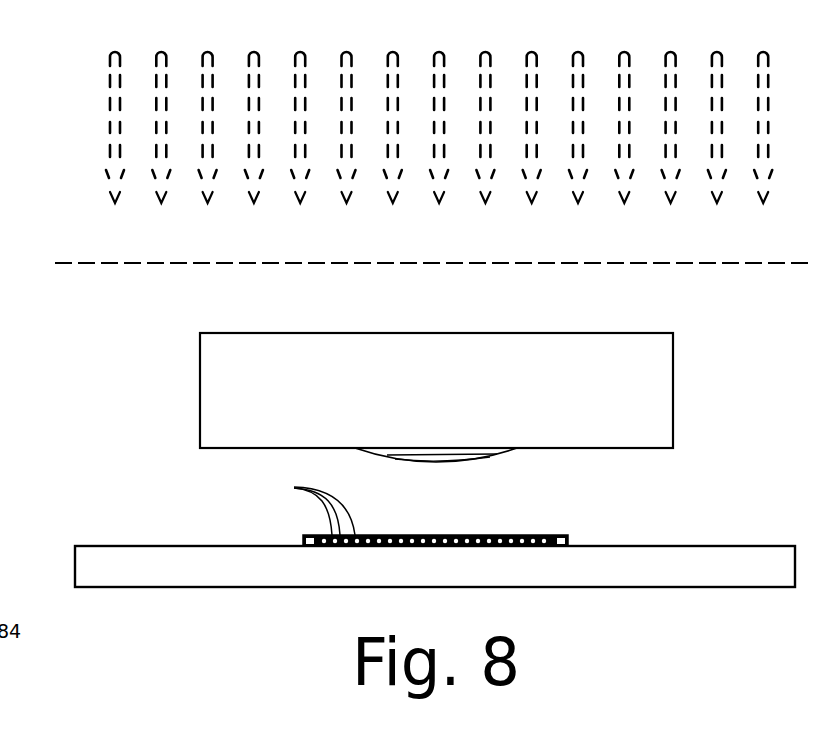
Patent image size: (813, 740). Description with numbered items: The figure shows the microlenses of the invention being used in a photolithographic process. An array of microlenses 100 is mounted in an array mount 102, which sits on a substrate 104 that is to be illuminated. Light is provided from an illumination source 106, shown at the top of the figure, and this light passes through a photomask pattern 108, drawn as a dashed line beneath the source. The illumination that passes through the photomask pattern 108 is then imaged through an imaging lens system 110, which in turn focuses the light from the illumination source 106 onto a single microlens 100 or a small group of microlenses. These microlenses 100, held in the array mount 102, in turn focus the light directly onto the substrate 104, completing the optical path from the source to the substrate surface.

The array of microlenses 100 is at (303, 508).
The array mount 102 is at (572, 541).
The substrate 104 is at (127, 553).
The illumination source 106 is at (112, 152).
The photomask pattern 108 is at (113, 262).
The imaging lens system 110 is at (436, 397).